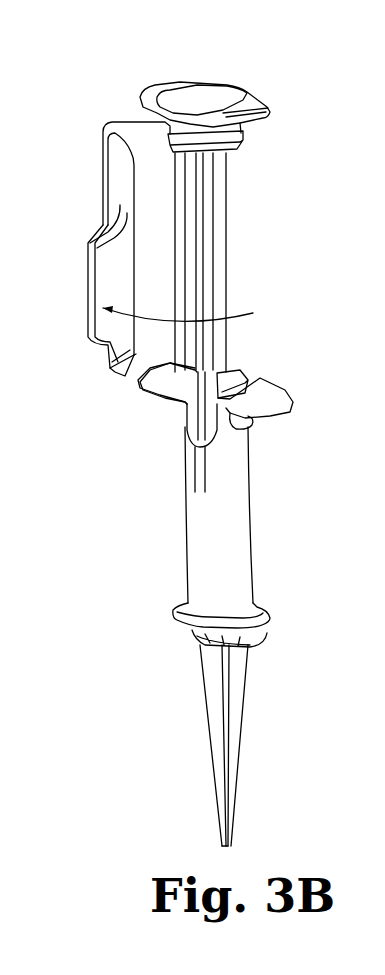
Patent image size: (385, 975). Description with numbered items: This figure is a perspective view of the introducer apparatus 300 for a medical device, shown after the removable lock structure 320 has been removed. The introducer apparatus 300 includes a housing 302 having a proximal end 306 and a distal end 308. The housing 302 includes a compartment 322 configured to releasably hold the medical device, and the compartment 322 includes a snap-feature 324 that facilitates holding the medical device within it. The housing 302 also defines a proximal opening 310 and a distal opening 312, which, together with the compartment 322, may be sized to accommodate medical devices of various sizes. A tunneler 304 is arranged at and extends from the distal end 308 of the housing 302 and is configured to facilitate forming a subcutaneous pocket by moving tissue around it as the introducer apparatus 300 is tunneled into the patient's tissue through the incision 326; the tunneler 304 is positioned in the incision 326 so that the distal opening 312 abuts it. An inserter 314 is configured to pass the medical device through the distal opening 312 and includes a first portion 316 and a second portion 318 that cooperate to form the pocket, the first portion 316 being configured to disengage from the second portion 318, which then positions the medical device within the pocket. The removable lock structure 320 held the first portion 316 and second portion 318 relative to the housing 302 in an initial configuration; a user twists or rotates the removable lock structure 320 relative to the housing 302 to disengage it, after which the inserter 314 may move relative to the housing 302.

The introducer apparatus 300 is at (191, 333).
The housing 302 is at (250, 512).
The tunneler 304 is at (229, 745).
The proximal end 306 is at (257, 428).
The distal end 308 is at (270, 608).
The proximal opening 310 is at (230, 364).
The distal opening 312 is at (237, 647).
The inserter 314 is at (302, 15).
The first portion 316 is at (232, 82).
The second portion 318 is at (258, 97).
The removable lock structure 320 is at (103, 114).
The compartment 322 is at (184, 426).
The snap-feature 324 is at (192, 471).
The incision 326 is at (267, 643).